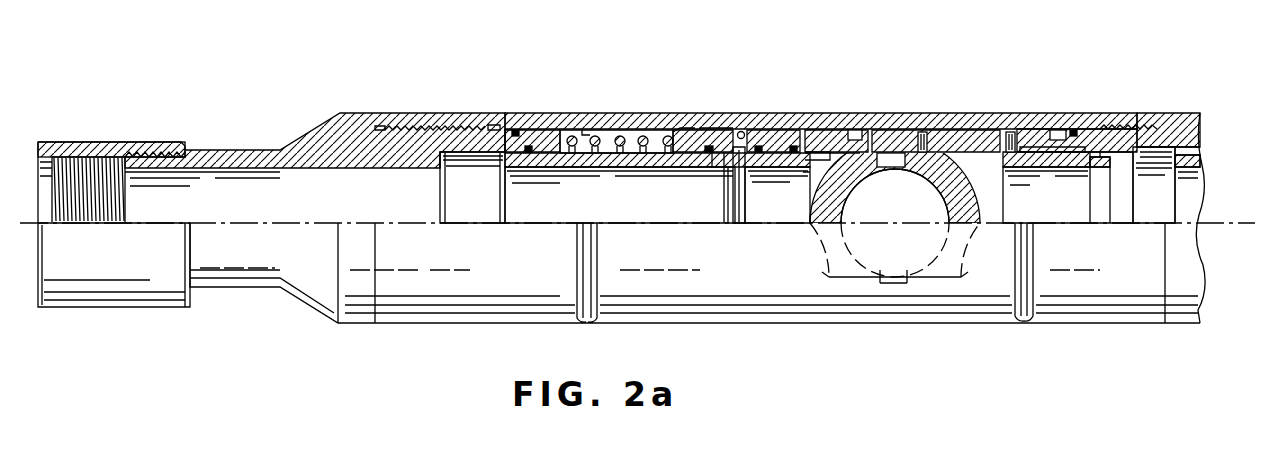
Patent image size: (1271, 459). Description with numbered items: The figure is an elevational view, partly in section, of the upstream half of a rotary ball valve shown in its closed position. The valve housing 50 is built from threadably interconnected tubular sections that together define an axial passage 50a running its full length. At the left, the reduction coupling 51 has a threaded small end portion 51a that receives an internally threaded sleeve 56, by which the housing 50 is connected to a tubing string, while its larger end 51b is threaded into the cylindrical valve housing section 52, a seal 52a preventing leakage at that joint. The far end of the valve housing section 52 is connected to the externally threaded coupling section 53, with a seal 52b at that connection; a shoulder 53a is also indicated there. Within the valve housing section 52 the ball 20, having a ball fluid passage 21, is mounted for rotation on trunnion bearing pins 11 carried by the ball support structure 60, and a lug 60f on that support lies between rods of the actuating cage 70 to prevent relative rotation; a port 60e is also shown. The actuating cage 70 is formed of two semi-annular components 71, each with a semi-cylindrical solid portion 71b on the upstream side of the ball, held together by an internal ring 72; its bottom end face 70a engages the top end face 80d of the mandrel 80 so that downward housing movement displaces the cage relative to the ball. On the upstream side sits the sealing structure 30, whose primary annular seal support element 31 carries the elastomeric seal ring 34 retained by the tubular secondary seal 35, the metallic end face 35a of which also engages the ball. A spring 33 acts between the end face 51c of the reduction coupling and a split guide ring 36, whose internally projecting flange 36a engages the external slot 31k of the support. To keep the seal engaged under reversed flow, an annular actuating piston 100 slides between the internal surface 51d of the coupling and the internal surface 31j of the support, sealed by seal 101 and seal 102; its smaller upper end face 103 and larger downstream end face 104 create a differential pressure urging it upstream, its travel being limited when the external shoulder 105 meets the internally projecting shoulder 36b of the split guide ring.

The trunnion bearing pin 11 is at (900, 168).
The ball 20 is at (809, 208).
The ball fluid passage 21 is at (845, 194).
The sealing structure 30 is at (793, 176).
The primary annular seal support element 31 is at (770, 130).
The internal surface of tubular portion 31j is at (728, 170).
The external slot 31k is at (747, 133).
The spring 33 is at (641, 138).
The elastomeric seal ring 34 is at (812, 135).
The secondary seal 35 is at (778, 138).
The metallic end face 35a is at (822, 268).
The split guide ring 36 is at (681, 138).
The internally projecting flange 36a is at (739, 129).
The internally projecting shoulder 36b is at (701, 130).
The valve housing 50 is at (616, 98).
The axial passage 50a is at (200, 172).
The reduction coupling 51 is at (228, 150).
The threaded small end portion 51a is at (150, 152).
The larger end 51b is at (398, 128).
The end face 51c is at (586, 136).
The internal surface 51d is at (468, 155).
The valve housing section 52 is at (500, 113).
The seal 52a is at (516, 130).
The seal 52b is at (1079, 127).
The coupling section 53 is at (1178, 113).
The shoulder 53a is at (1052, 132).
The internally threaded sleeve 56 is at (76, 142).
The ball support structure 60 is at (966, 152).
The port 60e is at (923, 132).
The lug 60f is at (1010, 132).
The actuating cage 70 is at (874, 117).
The bottom end face 70a is at (1140, 158).
The semi-annular component 71 is at (1058, 168).
The semi-cylindrical solid portion 71b is at (832, 130).
The internal ring 72 is at (1106, 166).
The mandrel 80 is at (1197, 200).
The top end face 80d is at (1155, 157).
The annular actuating piston 100 is at (597, 170).
The seal 101 is at (710, 166).
The seal 102 is at (528, 153).
The upper end face 103 is at (494, 162).
The downstream end face 104 is at (747, 201).
The external shoulder 105 is at (684, 162).